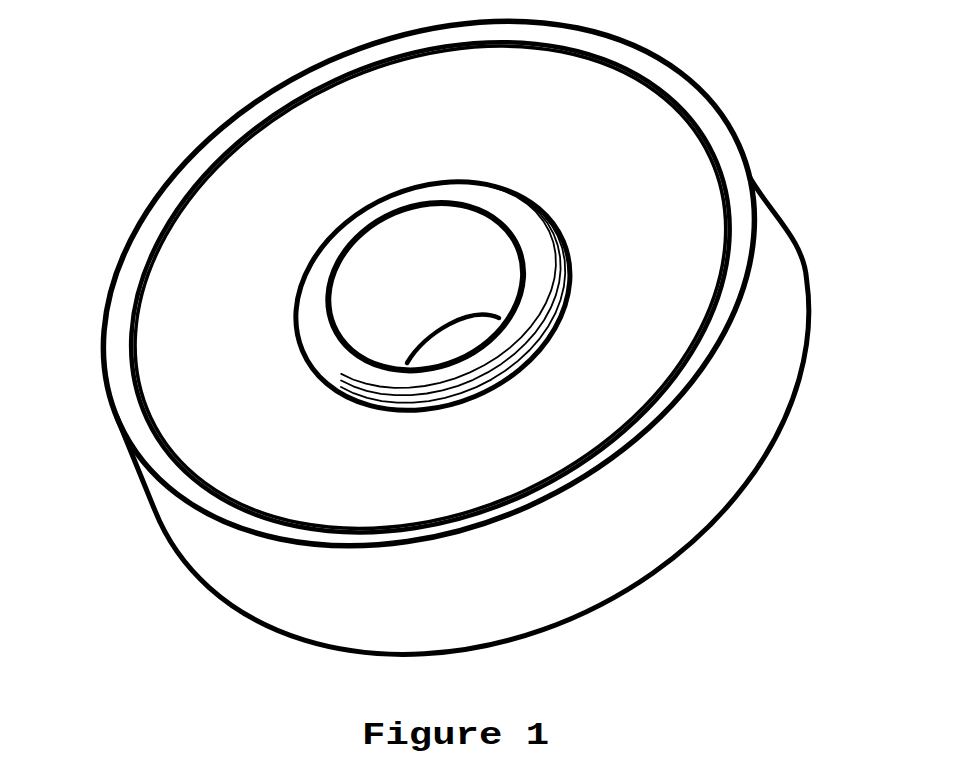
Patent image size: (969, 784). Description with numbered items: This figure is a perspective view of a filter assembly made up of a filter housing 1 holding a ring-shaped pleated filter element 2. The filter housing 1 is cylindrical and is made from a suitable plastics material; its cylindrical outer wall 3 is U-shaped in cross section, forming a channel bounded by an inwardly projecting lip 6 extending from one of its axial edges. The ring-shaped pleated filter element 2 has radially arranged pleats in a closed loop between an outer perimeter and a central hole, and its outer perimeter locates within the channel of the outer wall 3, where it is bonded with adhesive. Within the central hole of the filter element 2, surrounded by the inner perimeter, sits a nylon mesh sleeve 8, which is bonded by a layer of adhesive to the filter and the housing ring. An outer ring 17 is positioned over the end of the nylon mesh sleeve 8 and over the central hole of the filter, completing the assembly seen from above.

The filter housing 1 is at (807, 310).
The ring-shaped pleated filter element 2 is at (614, 134).
The cylindrical outer wall 3 is at (683, 497).
The inwardly projecting lip 6 is at (127, 413).
The nylon mesh sleeve 8 is at (400, 267).
The outer ring 17 is at (320, 313).